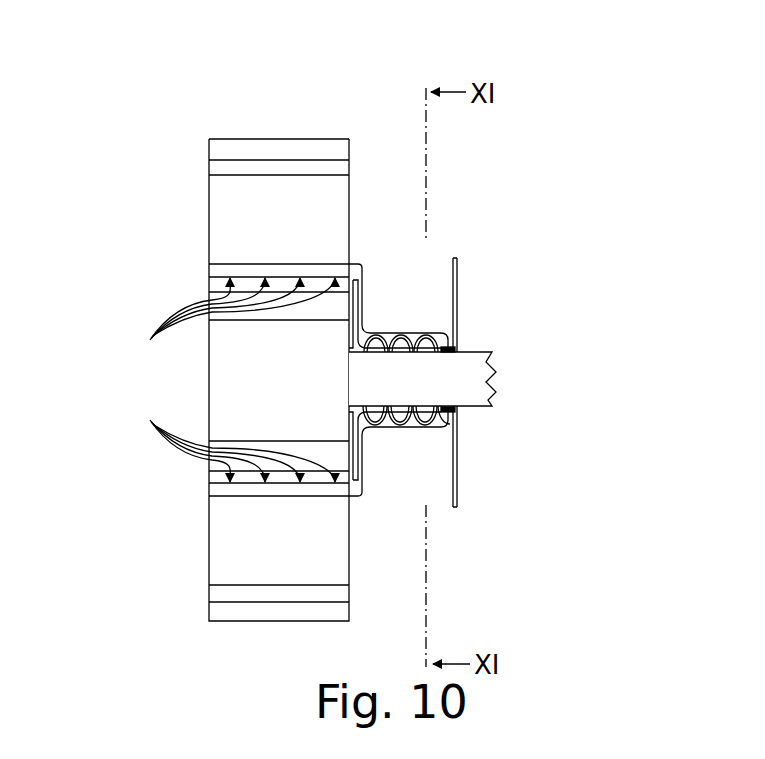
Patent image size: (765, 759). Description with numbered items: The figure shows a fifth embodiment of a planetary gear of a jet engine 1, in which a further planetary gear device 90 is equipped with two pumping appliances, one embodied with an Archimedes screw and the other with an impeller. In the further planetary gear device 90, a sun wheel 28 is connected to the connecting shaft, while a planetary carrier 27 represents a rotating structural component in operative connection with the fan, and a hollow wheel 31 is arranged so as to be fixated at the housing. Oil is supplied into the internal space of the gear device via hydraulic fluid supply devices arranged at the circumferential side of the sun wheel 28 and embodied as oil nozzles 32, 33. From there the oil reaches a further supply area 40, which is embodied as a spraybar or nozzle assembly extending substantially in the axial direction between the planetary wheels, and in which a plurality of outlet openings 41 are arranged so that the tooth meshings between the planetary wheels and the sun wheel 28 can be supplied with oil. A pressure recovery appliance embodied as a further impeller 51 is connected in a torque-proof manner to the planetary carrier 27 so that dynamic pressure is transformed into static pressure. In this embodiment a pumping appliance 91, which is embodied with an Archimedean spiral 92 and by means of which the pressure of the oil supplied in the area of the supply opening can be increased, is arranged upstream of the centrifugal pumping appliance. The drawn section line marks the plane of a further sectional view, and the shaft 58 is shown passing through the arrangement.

The jet engine 1 is at (153, 165).
The planetary carrier 27 is at (359, 264).
The sun wheel 28 is at (230, 369).
The hollow wheel 31 is at (292, 147).
The oil nozzle 32 is at (458, 295).
The oil nozzle 33 is at (458, 490).
The further supply area 40 is at (218, 270).
The outlet openings 41 is at (231, 380).
The further impeller 51 is at (366, 500).
The shaft 58 is at (493, 176).
The further planetary gear device 90 is at (330, 119).
The pumping appliance 91 is at (406, 327).
The Archimedean spiral 92 is at (450, 410).